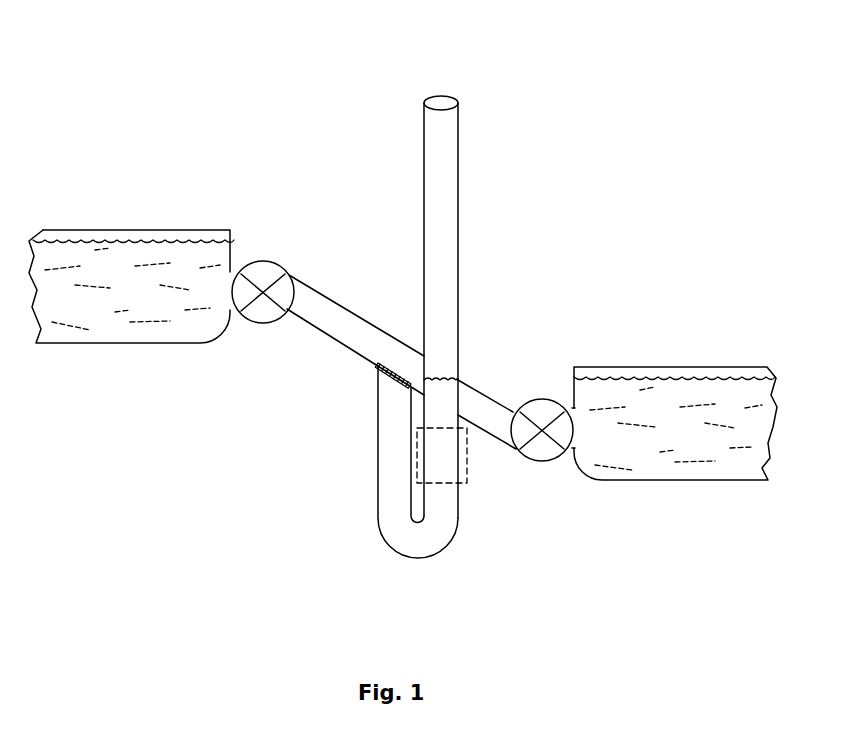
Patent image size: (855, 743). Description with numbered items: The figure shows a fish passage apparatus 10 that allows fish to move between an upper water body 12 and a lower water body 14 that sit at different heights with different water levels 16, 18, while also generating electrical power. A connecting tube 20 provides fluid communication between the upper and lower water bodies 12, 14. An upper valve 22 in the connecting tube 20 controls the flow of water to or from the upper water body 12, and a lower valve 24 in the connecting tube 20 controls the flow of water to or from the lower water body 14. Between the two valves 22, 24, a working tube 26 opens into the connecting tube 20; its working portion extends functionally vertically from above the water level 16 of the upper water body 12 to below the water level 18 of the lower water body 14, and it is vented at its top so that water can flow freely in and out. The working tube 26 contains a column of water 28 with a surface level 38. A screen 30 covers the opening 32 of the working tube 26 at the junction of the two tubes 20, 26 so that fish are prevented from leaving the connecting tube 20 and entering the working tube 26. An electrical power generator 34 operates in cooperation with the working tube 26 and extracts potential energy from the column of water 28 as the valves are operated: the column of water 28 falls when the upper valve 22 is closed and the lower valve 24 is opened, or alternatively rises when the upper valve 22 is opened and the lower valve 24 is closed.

The fish passage apparatus 10 is at (303, 88).
The upper water body 12 is at (75, 246).
The lower water body 14 is at (735, 400).
The water level of the upper water body 16 is at (160, 238).
The water level of the lower water body 18 is at (685, 375).
The connecting tube 20 is at (343, 316).
The upper valve 22 is at (267, 276).
The lower valve 24 is at (548, 400).
The working tube 26 is at (462, 153).
The column of water 28 is at (448, 406).
The screen 30 is at (393, 387).
The opening of the working tube 32 is at (398, 362).
The electrical power generator 34 is at (469, 458).
The surface level 38 is at (441, 378).